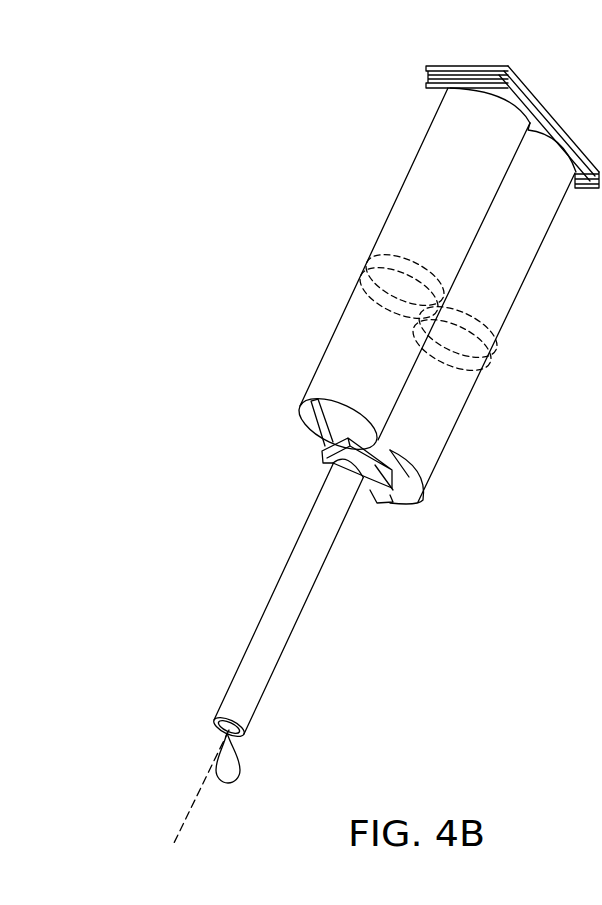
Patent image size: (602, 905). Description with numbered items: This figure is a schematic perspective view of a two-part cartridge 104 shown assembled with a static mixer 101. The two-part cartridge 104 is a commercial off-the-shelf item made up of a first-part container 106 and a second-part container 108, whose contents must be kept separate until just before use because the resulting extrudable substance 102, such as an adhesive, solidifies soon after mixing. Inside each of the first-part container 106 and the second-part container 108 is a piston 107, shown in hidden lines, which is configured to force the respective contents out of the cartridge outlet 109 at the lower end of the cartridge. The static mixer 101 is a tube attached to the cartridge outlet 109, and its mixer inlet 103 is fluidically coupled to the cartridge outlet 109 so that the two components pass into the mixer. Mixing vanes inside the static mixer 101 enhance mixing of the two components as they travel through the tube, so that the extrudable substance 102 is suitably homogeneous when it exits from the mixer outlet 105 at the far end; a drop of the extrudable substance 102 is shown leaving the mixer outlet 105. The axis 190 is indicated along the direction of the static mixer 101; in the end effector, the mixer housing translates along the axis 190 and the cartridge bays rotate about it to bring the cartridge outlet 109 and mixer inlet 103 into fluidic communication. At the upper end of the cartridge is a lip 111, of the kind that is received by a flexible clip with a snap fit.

The static mixer 101 is at (267, 607).
The extrudable substance 102 is at (247, 772).
The mixer inlet 103 is at (373, 508).
The two-part cartridge 104 is at (329, 345).
The mixer outlet 105 is at (209, 732).
The first-part container 106 is at (413, 165).
The piston 107 is at (372, 260).
The second-part container 108 is at (453, 430).
The cartridge outlet 109 is at (312, 456).
The lip 111 is at (522, 88).
The axis 190 is at (178, 830).